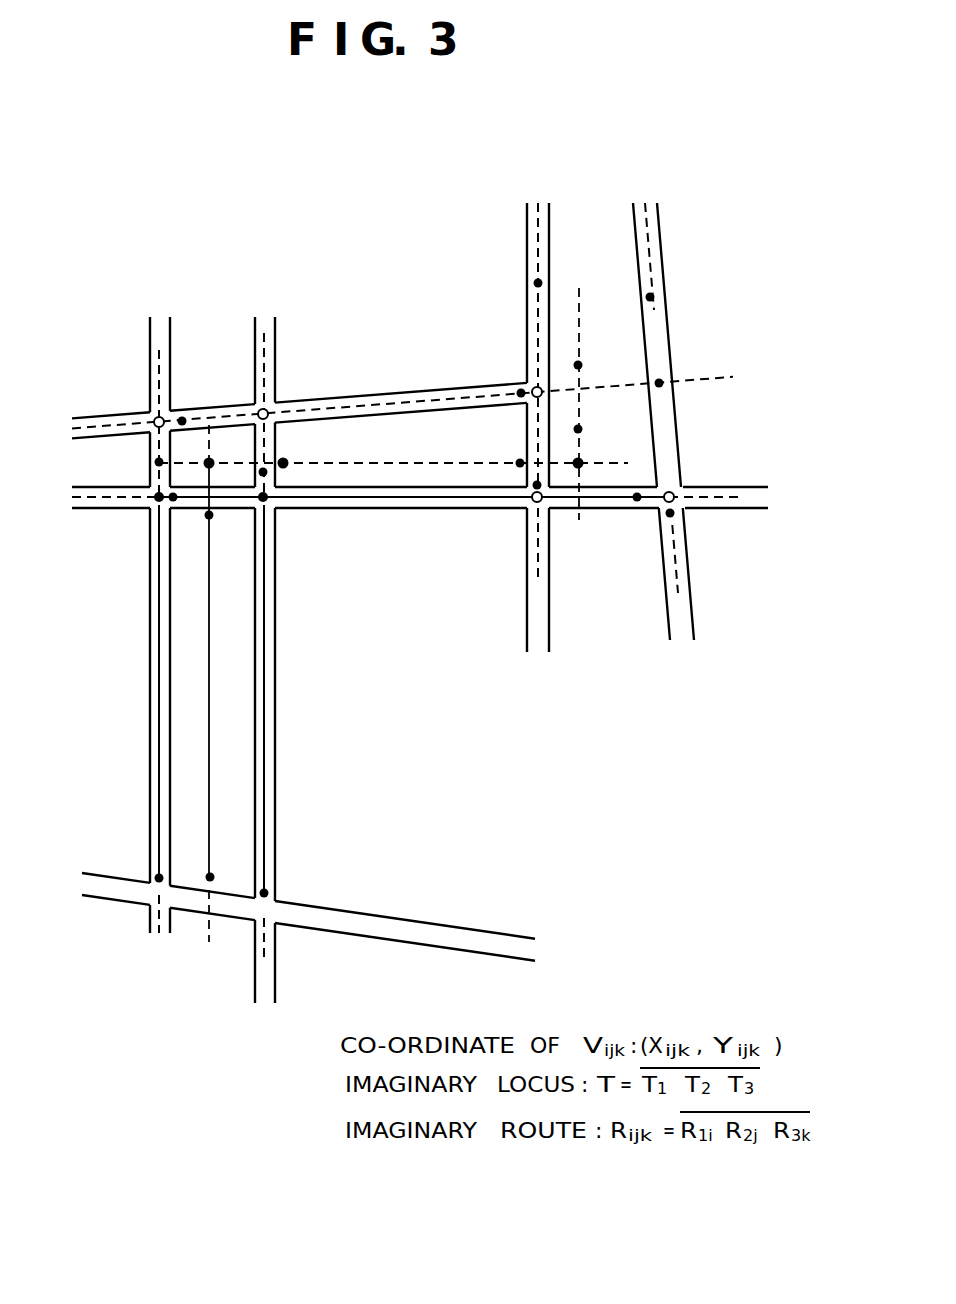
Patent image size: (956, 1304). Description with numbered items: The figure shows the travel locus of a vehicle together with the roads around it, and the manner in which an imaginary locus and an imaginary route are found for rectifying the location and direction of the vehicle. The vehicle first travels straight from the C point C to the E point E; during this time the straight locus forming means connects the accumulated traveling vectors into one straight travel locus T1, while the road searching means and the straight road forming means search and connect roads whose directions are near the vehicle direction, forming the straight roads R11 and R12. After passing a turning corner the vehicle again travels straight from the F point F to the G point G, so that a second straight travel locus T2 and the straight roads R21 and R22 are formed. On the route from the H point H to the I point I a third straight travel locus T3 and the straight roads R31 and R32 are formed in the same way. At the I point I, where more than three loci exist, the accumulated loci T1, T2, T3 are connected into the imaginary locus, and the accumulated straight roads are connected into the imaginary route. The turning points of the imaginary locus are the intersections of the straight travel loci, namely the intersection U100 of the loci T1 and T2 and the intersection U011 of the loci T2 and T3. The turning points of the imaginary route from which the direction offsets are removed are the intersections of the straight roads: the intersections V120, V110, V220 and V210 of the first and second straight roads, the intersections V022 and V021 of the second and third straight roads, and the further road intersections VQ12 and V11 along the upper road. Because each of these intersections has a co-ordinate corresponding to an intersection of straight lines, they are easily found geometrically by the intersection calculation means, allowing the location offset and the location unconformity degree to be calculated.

The straight road R12 is at (160, 763).
The straight road R11 is at (265, 782).
The straight road R21 is at (394, 400).
The straight road R22 is at (450, 506).
The straight road R32 is at (526, 302).
The straight road R31 is at (655, 317).
The straight travel locus T1 is at (210, 750).
The straight travel locus T2 is at (392, 462).
The straight travel locus T3 is at (580, 407).
The intersection of straight roads V120 is at (155, 416).
The intersection of straight travel loci U100 is at (209, 458).
The intersection of straight roads V110 is at (266, 410).
The F point F is at (287, 462).
The G point G is at (518, 461).
The intersection of straight roads VQ12 is at (534, 387).
The I point I is at (581, 365).
The H point H is at (580, 429).
The intersection of straight roads V11 is at (662, 378).
The intersection of straight roads V220 is at (155, 510).
The E point E is at (211, 517).
The intersection of straight roads V210 is at (265, 500).
The intersection of straight roads V022 is at (540, 501).
The intersection of straight travel loci U011 is at (579, 466).
The intersection of straight roads V021 is at (673, 499).
The C point C is at (213, 876).